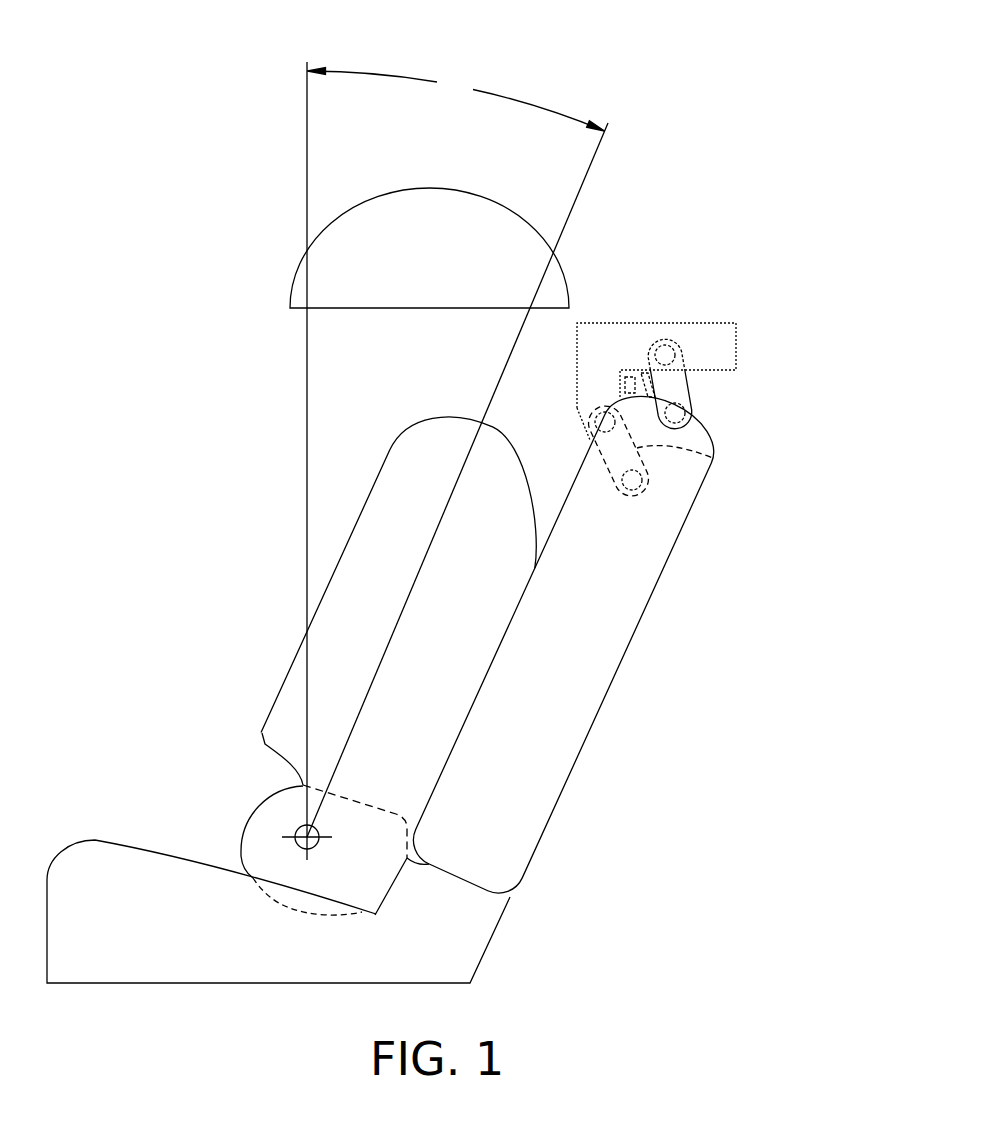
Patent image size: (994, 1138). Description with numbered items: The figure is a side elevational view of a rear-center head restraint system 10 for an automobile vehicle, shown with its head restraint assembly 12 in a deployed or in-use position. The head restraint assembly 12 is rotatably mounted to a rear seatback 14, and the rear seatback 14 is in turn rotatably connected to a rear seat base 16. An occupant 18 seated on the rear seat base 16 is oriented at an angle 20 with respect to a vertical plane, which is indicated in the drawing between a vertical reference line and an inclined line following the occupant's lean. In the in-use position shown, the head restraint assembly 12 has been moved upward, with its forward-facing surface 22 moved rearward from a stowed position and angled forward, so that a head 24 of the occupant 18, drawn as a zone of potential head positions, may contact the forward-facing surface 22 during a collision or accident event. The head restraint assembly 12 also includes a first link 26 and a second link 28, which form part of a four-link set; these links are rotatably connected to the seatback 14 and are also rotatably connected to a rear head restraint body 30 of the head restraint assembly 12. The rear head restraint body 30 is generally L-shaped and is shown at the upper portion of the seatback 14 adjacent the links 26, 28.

The rear-center head restraint system 10 is at (767, 147).
The head restraint assembly 12 is at (642, 272).
The rear seatback 14 is at (582, 702).
The rear seat base 16 is at (168, 963).
The occupant 18 is at (445, 422).
The angle 20 is at (456, 100).
The forward-facing surface 22 is at (575, 377).
The head 24 is at (458, 217).
The first link 26 is at (713, 458).
The second link 28 is at (675, 385).
The rear head restraint body 30 is at (700, 330).